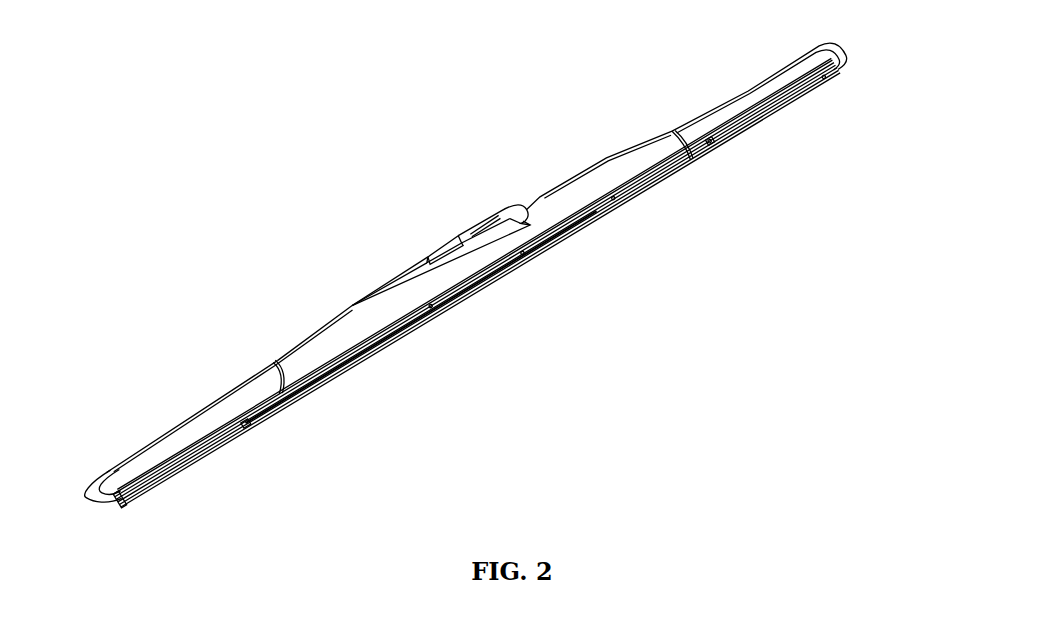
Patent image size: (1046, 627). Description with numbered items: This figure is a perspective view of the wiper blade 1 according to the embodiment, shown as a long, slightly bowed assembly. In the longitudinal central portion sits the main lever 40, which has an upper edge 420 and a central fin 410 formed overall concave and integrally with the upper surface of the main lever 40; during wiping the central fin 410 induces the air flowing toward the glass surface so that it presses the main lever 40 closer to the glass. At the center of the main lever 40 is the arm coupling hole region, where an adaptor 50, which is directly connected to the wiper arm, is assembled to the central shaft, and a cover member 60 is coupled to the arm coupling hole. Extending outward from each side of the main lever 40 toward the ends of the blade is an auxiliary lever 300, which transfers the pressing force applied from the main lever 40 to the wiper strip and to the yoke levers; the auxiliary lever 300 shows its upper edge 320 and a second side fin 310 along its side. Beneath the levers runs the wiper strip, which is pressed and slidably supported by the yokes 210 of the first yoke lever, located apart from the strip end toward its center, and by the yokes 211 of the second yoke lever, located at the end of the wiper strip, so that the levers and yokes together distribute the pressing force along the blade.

The wiper blade 1 is at (690, 32).
The main lever 40 is at (340, 308).
The adaptor 50 is at (482, 215).
The cover member 60 is at (445, 240).
The yokes 210 is at (433, 307).
The yokes 211 is at (246, 428).
The auxiliary lever 300 is at (208, 402).
The second side fin 310 is at (170, 452).
The upper edge 320 is at (167, 433).
The central fin 410 is at (354, 330).
The upper edge 420 is at (316, 331).